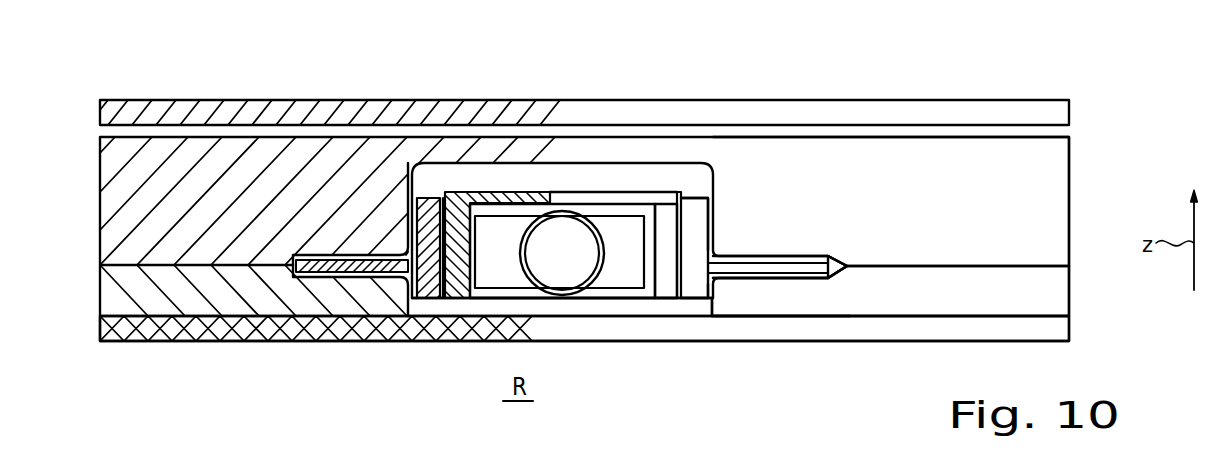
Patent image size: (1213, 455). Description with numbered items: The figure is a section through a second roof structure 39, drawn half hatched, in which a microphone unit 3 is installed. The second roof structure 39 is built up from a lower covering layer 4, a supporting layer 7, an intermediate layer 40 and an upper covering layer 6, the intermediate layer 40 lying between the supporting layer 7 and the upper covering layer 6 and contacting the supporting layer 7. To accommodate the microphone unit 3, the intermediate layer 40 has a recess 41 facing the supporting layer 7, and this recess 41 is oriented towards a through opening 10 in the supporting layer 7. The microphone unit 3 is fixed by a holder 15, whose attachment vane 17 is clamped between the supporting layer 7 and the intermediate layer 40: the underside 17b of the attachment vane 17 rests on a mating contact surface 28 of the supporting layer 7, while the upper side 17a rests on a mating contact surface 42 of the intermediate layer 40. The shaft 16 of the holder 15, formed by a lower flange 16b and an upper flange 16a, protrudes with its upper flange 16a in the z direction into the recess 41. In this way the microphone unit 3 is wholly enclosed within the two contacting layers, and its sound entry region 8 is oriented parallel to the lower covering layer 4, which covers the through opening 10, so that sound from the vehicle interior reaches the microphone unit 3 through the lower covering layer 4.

The second roof structure 39 is at (1062, 67).
The upper covering layer 6 is at (1057, 115).
The intermediate layer 40 is at (1012, 211).
The supporting layer 7 is at (1043, 293).
The lower covering layer 4 is at (1055, 332).
The recess 41 is at (655, 173).
The through opening 10 is at (674, 306).
The mating contact surface 42 is at (786, 279).
The sound entry region 8 is at (603, 299).
The holder 15 is at (663, 282).
The microphone unit 3 is at (685, 180).
The shaft 16 is at (703, 180).
The upper flange 16a is at (698, 221).
The lower flange 16b is at (695, 280).
The mating contact surface 28 is at (763, 262).
The attachment vane 17 is at (823, 250).
The upper side 17a is at (812, 265).
The underside 17b is at (804, 279).